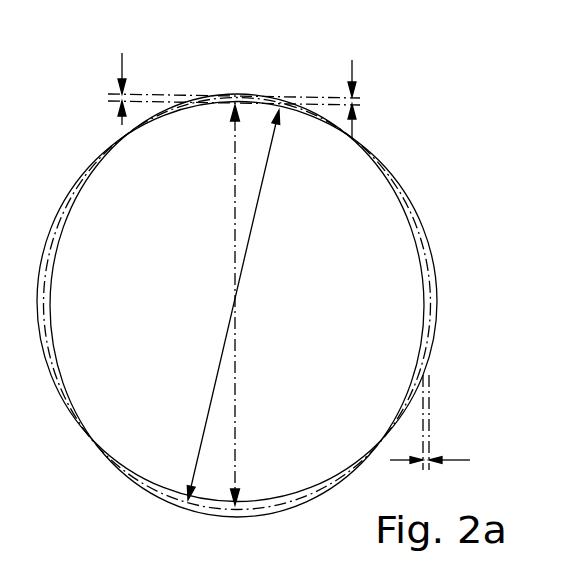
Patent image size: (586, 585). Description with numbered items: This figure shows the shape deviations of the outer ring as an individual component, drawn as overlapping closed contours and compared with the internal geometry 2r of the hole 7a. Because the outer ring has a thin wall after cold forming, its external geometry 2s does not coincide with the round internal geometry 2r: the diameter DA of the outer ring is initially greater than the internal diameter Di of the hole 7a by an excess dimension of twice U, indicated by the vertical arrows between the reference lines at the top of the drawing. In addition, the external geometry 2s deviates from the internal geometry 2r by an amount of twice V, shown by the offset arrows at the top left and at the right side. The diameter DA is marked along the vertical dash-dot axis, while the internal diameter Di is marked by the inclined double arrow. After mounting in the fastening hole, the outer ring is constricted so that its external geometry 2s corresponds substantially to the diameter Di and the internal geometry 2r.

The external geometry 2s is at (237, 93).
The hole 7a is at (237, 304).
The internal geometry 2r is at (307, 120).
The excess dimension U is at (355, 100).
The shape deviation amount V is at (118, 96).
The internal diameter Di is at (222, 352).
The diameter of the external geometry DA is at (237, 352).